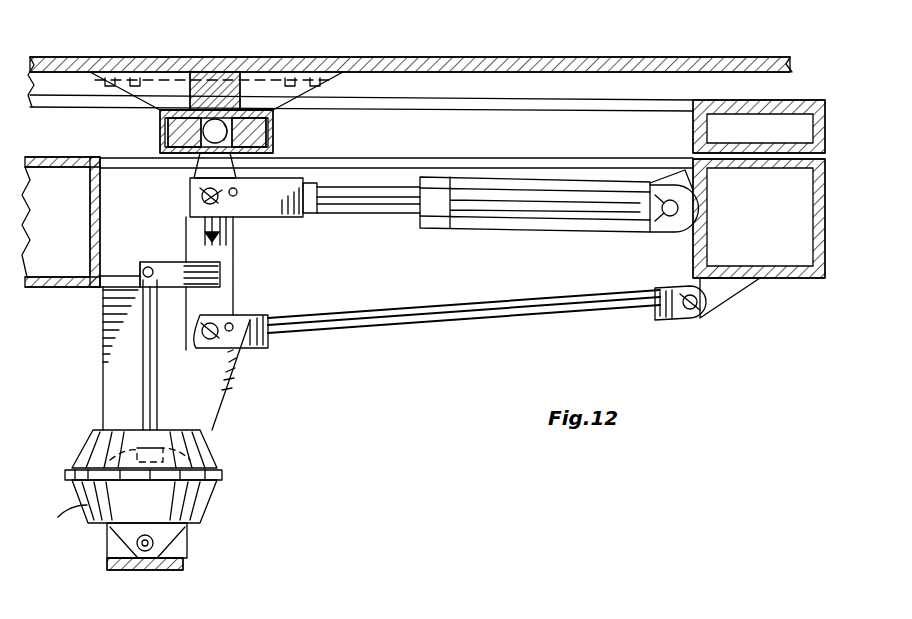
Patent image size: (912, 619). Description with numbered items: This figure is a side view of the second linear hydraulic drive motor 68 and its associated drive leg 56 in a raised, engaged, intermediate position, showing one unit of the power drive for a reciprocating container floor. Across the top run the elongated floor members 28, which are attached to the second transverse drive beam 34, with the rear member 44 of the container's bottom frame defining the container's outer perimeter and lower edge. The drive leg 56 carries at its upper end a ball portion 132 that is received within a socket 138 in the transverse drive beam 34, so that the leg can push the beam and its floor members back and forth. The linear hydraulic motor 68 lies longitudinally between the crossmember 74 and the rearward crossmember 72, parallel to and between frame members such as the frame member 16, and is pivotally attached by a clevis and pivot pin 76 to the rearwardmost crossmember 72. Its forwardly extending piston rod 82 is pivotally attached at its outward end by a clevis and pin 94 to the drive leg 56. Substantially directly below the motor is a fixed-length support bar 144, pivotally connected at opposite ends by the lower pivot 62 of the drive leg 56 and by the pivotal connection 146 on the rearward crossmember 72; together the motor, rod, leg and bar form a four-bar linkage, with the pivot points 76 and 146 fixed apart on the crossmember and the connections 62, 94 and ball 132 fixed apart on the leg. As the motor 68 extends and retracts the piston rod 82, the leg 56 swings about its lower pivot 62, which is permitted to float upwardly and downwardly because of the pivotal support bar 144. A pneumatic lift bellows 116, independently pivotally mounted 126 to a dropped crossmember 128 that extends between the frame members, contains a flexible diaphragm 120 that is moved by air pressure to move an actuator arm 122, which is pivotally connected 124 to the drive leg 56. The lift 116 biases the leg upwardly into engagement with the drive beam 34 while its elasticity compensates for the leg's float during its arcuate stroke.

The second set of floor members 28 is at (553, 57).
The rear member 44 is at (808, 100).
The rearward crossmember 72 is at (787, 279).
The socket 138 is at (200, 110).
The ball portion 132 is at (255, 110).
The second transverse drive beam 34 is at (273, 128).
The frame member 16 is at (122, 190).
The crossmember 74 is at (58, 278).
The pin 94 is at (195, 216).
The drive leg 56 is at (233, 247).
The piston rod 82 is at (353, 203).
The linear hydraulic motor 68 is at (561, 197).
The clevis and pivot pin 76 is at (688, 204).
The pivot pin 62 is at (240, 378).
The support bar 144 is at (450, 324).
The pivotal connection 146 is at (700, 314).
The pivotal connection 124 is at (102, 335).
The actuator arm 122 is at (143, 382).
The flexible diaphragm 120 is at (217, 447).
The pneumatic lift bellows 116 is at (205, 494).
The pivotal mounting 126 is at (153, 543).
The dropped crossmember 128 is at (190, 568).